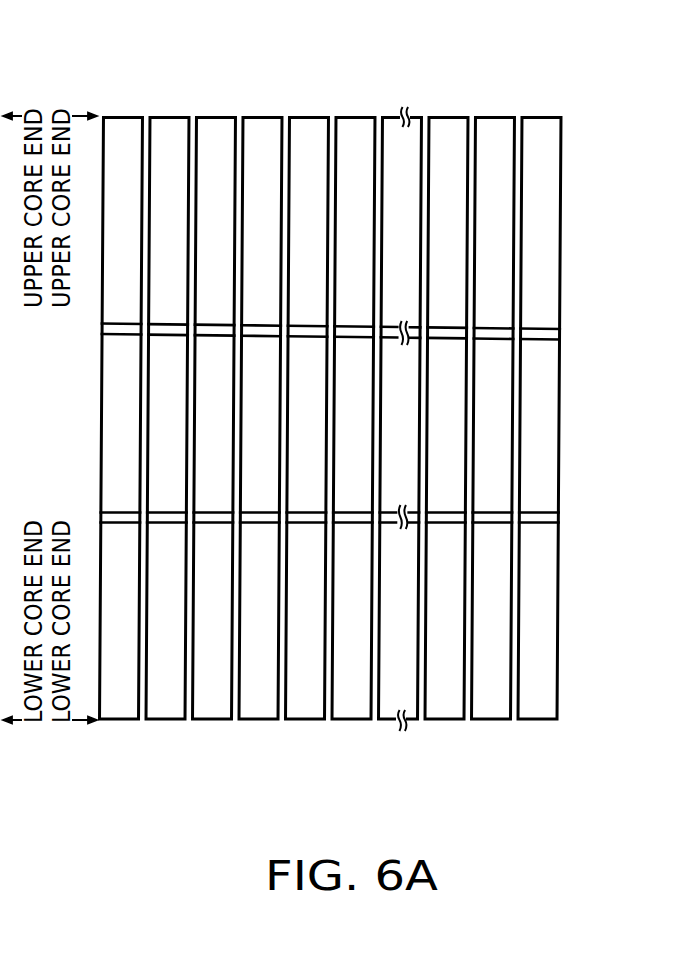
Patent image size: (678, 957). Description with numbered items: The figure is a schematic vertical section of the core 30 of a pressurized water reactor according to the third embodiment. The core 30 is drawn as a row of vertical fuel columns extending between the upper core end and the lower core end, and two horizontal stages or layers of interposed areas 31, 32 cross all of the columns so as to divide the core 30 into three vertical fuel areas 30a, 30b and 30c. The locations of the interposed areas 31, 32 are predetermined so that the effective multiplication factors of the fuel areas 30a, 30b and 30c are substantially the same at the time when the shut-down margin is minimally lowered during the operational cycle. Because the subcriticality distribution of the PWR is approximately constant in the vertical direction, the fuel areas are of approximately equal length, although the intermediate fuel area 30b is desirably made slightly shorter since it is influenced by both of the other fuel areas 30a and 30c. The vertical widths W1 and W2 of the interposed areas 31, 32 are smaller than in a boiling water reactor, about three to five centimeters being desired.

The core 30 is at (413, 88).
The fuel area 30a is at (621, 334).
The intermediate fuel area 30b is at (612, 337).
The fuel area 30c is at (612, 521).
The interposed area 31 is at (541, 331).
The interposed area 32 is at (538, 520).
The vertical width of interposed area W1 is at (578, 368).
The vertical width of interposed area W2 is at (577, 560).